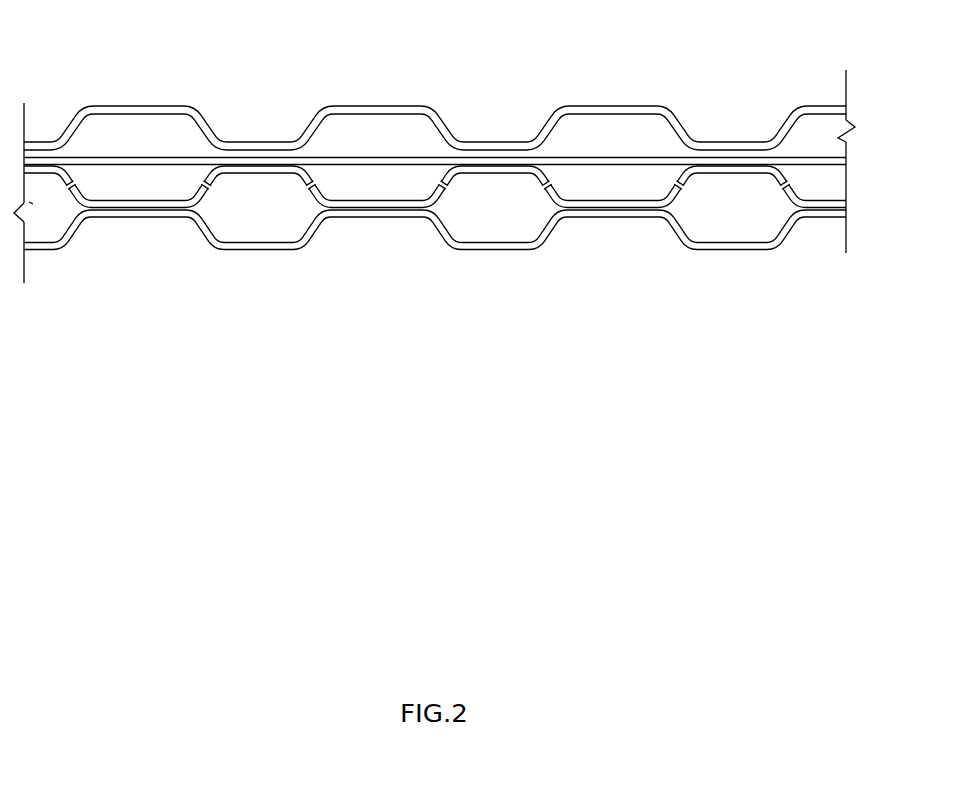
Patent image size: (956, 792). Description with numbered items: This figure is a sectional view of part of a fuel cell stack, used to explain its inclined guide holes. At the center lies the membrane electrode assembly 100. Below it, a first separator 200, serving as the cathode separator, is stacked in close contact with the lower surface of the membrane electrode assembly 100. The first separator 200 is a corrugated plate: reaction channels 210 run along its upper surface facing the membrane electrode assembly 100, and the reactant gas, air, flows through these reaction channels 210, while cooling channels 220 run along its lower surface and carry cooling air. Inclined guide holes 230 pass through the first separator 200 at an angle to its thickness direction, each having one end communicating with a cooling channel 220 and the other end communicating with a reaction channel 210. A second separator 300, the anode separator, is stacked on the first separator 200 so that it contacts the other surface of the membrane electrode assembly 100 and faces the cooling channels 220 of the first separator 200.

The membrane electrode assembly 100 is at (800, 148).
The first separator 200 is at (831, 203).
The second separator 300 is at (813, 212).
The reaction channels 210 is at (366, 184).
The cooling channels 220 is at (725, 210).
The inclined guide holes 230 is at (299, 170).